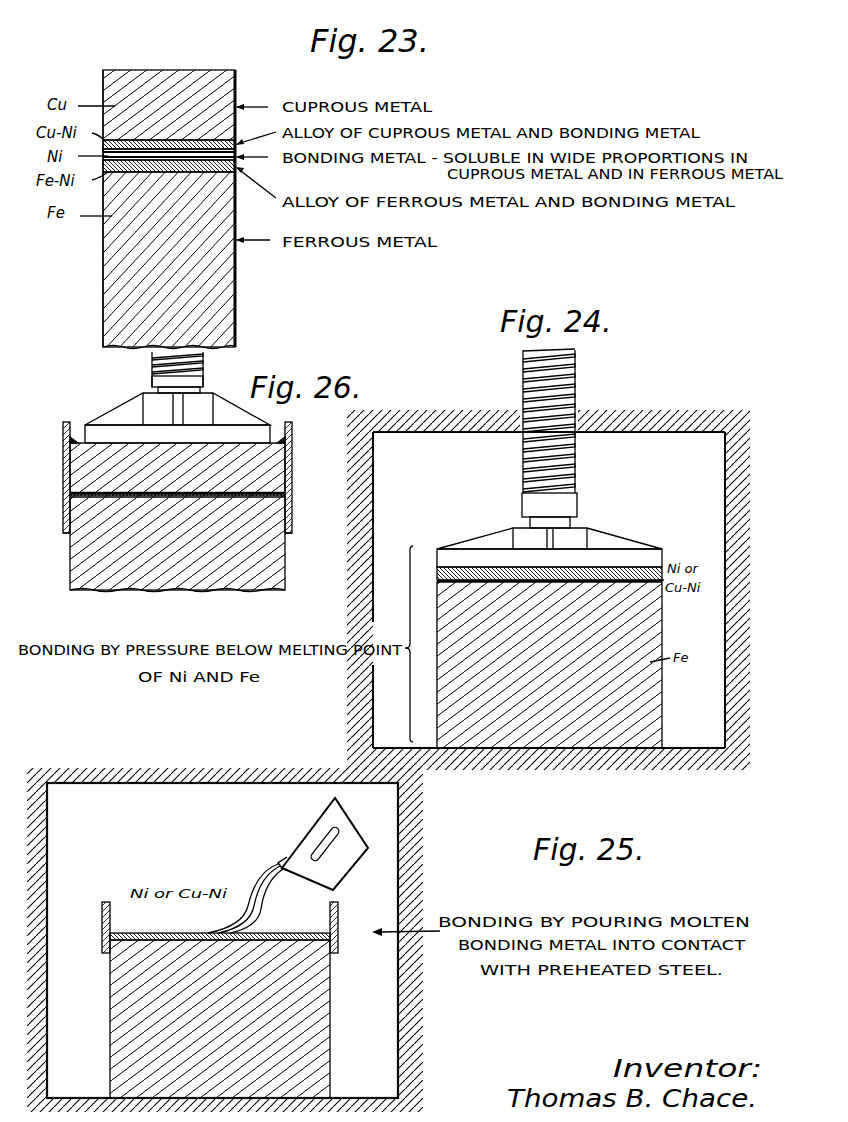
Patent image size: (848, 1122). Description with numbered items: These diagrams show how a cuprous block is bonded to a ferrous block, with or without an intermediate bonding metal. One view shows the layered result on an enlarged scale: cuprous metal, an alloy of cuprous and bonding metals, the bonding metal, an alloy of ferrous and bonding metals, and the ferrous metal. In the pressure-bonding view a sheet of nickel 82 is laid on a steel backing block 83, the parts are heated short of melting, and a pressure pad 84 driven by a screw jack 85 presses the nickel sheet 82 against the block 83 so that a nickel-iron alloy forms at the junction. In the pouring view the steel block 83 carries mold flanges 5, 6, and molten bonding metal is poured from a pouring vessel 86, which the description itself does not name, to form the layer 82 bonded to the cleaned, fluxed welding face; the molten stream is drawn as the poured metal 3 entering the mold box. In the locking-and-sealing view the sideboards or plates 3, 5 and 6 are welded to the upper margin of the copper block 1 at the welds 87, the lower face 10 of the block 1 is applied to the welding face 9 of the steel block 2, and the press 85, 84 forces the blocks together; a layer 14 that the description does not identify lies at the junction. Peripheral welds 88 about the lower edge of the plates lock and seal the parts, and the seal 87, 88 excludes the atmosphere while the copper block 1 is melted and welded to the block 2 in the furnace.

In FIG. 26, the copper block 1 is at (288, 471).
In FIG. 26, the steel block 2 is at (275, 566).
In FIG. 25, the end strip 3 is at (243, 905).
In FIG. 26, the side strip 5 is at (68, 453).
In FIG. 25, the side strip 5 is at (101, 914).
In FIG. 26, the side strip 6 is at (289, 451).
In FIG. 25, the side strip 6 is at (339, 913).
In FIG. 26, the welding face of the steel block 9 is at (108, 501).
In FIG. 26, the welding face of the copper block 10 is at (107, 487).
In FIG. 26, the cuprous alloy layer 14 is at (107, 497).
In FIG. 24, the nickel sheet 82 is at (459, 567).
In FIG. 25, the nickel sheet 82 is at (120, 930).
In FIG. 24, the steel backing block 83 is at (648, 711).
In FIG. 25, the steel backing block 83 is at (110, 1015).
In FIG. 26, the pressure pad 84 is at (110, 430).
In FIG. 24, the pressure pad 84 is at (612, 553).
In FIG. 26, the screw jack 85 is at (153, 376).
In FIG. 24, the screw jack 85 is at (577, 480).
In FIG. 25, the pouring ladle 86 is at (345, 832).
In FIG. 26, the weld seal 87 is at (74, 438).
In FIG. 26, the seal weld 88 is at (63, 538).